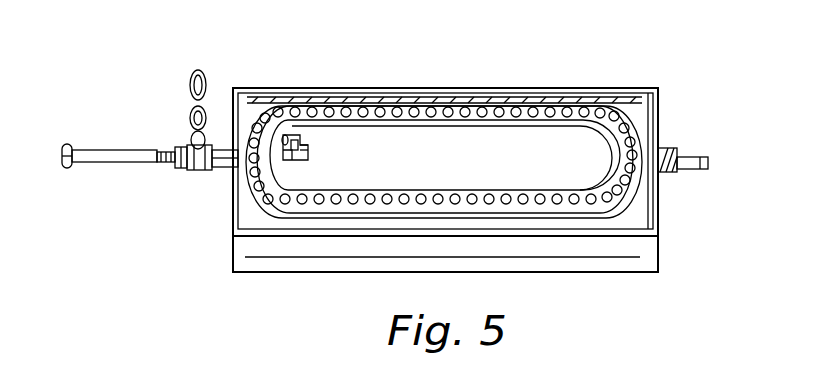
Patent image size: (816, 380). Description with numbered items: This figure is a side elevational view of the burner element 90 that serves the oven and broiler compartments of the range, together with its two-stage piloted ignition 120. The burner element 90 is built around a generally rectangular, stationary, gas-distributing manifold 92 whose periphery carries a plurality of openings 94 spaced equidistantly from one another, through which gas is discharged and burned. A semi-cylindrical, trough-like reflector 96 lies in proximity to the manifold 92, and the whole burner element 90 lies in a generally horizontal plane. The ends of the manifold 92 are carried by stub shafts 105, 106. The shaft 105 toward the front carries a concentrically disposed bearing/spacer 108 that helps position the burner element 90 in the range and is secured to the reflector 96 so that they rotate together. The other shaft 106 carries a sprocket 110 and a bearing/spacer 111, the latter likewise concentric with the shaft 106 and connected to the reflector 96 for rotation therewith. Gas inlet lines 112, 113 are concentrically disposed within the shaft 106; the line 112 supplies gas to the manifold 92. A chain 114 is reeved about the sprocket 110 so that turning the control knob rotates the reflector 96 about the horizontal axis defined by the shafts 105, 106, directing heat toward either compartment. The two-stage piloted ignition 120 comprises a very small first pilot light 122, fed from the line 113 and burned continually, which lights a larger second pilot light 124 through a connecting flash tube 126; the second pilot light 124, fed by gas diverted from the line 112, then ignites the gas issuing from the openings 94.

The burner element 90 is at (520, 75).
The gas-distributing manifold 92 is at (512, 120).
The openings 94 is at (423, 196).
The reflector 96 is at (642, 265).
The stub shaft 105 is at (693, 160).
The stub shaft 106 is at (163, 150).
The bearing/spacer 108 is at (667, 168).
The sprocket 110 is at (192, 145).
The bearing/spacer 111 is at (180, 168).
The gas inlet line 112 is at (103, 163).
The gas inlet line 113 is at (97, 150).
The chain 114 is at (191, 90).
The two-stage piloted ignition 120 is at (317, 151).
The first pilot light 122 is at (296, 140).
The second pilot light 124 is at (311, 147).
The flash tube 126 is at (305, 140).